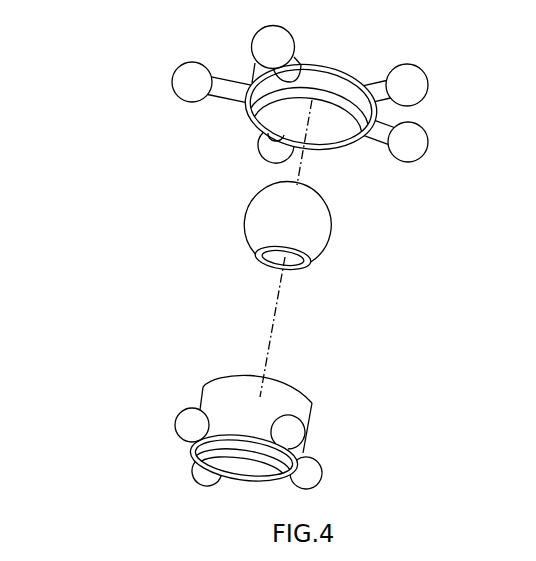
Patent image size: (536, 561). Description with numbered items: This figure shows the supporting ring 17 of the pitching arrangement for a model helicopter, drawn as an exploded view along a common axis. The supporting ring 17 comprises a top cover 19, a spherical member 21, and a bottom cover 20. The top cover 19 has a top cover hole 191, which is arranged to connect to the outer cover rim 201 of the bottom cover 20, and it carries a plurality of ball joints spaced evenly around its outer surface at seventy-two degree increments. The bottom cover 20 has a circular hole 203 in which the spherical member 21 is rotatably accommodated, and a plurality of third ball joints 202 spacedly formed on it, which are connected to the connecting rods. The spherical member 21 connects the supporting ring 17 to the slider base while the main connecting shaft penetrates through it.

The supporting ring 17 is at (258, 263).
The top cover 19 is at (311, 102).
The top cover hole 191 is at (262, 117).
The spherical member 21 is at (337, 234).
The bottom cover 20 is at (235, 398).
The outer cover rim 201 is at (198, 375).
The third ball joints 202 is at (185, 412).
The circular hole 203 is at (181, 464).